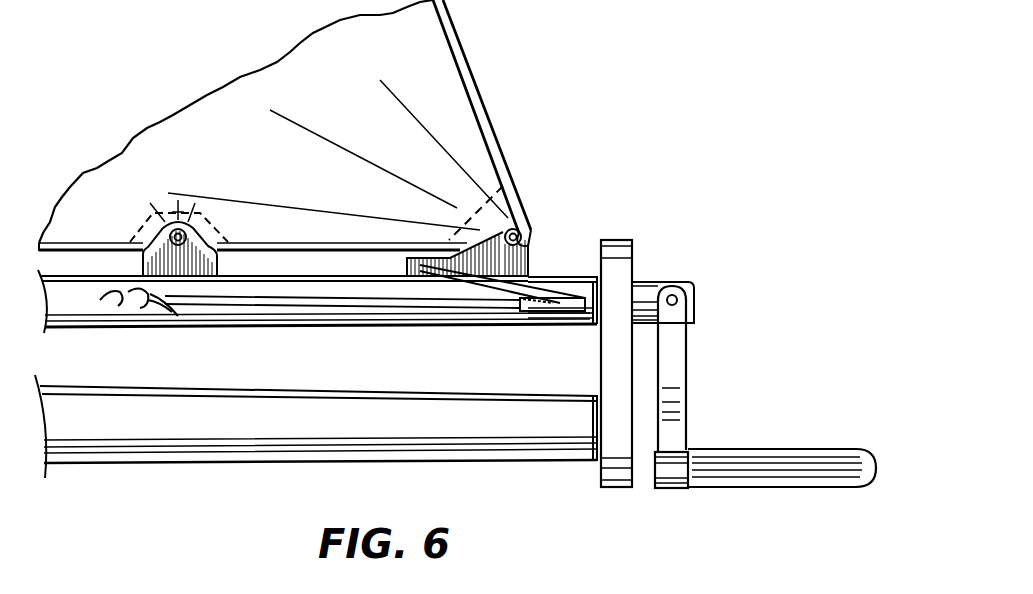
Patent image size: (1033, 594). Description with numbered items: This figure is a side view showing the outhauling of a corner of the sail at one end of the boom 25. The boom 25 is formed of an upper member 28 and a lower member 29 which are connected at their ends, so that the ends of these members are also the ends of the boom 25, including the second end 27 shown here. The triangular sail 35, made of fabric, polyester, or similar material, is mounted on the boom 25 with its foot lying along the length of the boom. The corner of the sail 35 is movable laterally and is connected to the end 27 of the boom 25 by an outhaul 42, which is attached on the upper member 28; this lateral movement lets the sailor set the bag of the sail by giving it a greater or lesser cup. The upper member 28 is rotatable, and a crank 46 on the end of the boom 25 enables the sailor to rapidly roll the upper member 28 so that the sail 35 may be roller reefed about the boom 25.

The boom 25 is at (218, 474).
The second end of the boom 27 is at (612, 490).
The upper member 28 is at (577, 287).
The lower member 29 is at (545, 442).
The triangular sail 35 is at (423, 73).
The outhaul 42 is at (463, 333).
The crank 46 is at (688, 370).